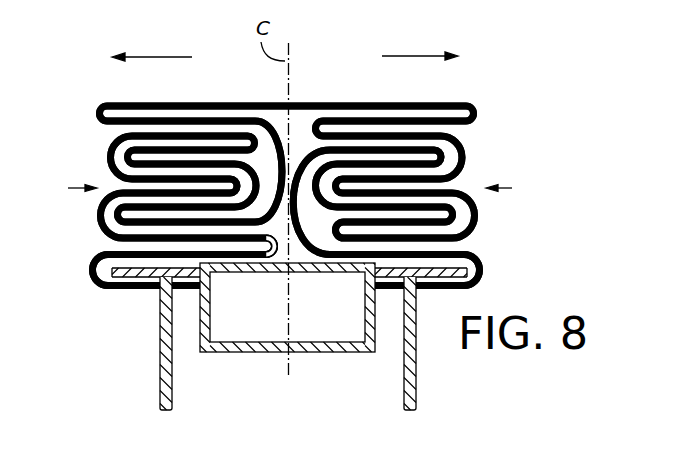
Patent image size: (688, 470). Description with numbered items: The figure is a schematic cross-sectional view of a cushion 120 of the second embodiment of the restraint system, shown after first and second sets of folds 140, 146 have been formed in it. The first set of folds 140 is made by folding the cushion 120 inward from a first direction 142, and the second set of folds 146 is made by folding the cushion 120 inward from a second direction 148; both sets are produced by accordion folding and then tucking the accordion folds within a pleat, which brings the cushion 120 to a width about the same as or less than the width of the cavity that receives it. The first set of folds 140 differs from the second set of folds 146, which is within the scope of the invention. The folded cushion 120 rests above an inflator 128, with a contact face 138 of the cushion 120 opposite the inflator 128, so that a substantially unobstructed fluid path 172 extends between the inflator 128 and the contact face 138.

The cushion 120 is at (127, 104).
The inflator 128 is at (340, 345).
The contact face 138 is at (308, 103).
The first set of folds 140 is at (520, 188).
The first direction 142 is at (403, 56).
The second set of folds 146 is at (62, 188).
The second direction 148 is at (170, 57).
The fluid path 172 is at (281, 235).